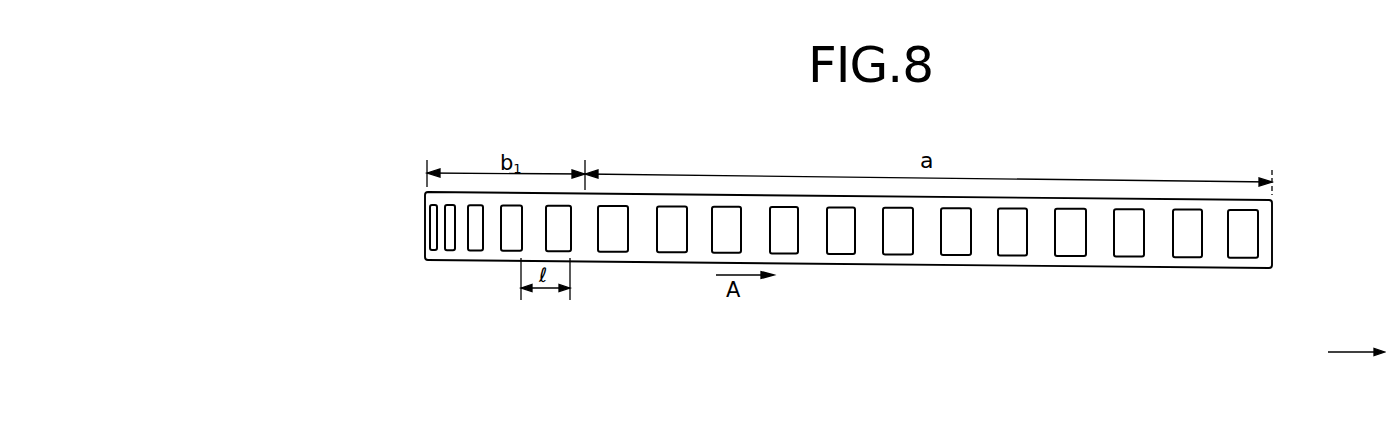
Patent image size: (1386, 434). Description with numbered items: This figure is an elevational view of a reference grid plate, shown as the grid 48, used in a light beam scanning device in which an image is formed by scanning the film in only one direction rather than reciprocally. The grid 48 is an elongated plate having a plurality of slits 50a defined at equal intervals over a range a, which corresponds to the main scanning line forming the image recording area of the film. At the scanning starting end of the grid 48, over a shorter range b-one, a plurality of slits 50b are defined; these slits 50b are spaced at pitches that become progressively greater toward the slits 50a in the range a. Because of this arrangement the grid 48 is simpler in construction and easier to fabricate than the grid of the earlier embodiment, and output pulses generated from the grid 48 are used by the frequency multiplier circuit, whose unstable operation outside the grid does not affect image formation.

The grid 48 is at (875, 256).
The slits 50a is at (1070, 246).
The slits 50b is at (478, 242).